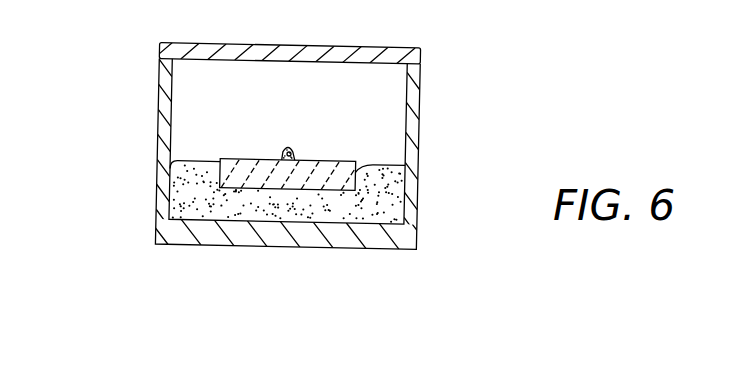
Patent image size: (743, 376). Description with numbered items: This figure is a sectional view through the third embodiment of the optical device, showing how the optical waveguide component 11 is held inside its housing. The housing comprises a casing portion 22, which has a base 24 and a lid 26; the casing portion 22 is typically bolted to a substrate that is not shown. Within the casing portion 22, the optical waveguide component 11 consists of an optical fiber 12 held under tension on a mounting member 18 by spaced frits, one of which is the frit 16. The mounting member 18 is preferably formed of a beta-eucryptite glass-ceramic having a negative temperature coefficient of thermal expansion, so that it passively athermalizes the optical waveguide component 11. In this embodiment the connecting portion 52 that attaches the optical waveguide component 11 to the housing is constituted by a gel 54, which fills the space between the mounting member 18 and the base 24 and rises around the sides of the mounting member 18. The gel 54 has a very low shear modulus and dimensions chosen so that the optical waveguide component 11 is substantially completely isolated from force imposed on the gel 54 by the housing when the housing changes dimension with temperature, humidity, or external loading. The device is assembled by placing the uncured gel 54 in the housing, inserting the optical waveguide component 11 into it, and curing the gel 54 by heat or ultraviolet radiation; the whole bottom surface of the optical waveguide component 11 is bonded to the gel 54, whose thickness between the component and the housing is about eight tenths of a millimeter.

The optical waveguide component 11 is at (293, 130).
The optical fiber 12 is at (294, 153).
The frit 16 is at (305, 130).
The mounting member 18 is at (232, 160).
The casing portion 22 is at (322, 127).
The base 24 is at (413, 111).
The lid 26 is at (347, 50).
The connecting portion 52 is at (372, 152).
The gel 54 is at (392, 203).